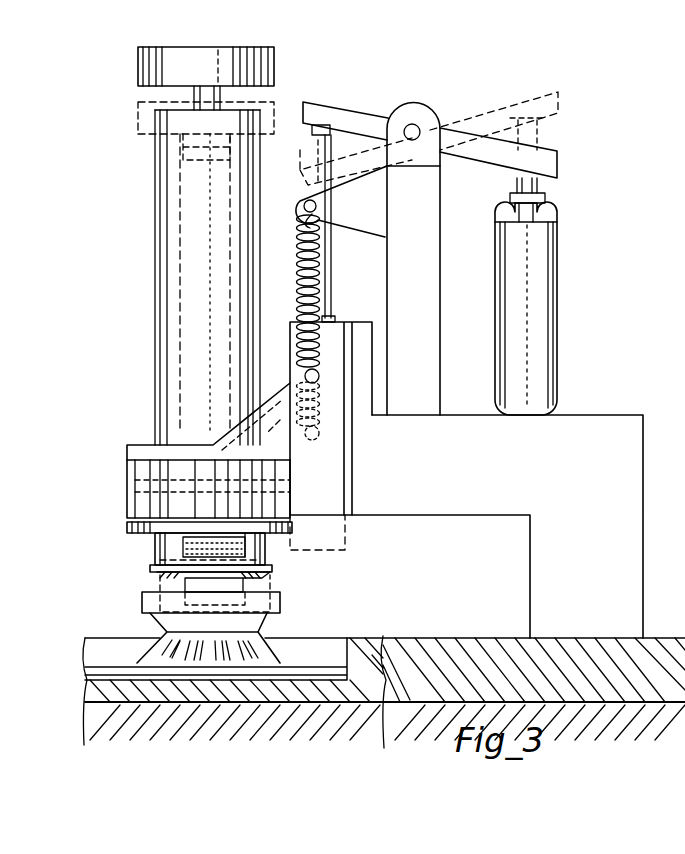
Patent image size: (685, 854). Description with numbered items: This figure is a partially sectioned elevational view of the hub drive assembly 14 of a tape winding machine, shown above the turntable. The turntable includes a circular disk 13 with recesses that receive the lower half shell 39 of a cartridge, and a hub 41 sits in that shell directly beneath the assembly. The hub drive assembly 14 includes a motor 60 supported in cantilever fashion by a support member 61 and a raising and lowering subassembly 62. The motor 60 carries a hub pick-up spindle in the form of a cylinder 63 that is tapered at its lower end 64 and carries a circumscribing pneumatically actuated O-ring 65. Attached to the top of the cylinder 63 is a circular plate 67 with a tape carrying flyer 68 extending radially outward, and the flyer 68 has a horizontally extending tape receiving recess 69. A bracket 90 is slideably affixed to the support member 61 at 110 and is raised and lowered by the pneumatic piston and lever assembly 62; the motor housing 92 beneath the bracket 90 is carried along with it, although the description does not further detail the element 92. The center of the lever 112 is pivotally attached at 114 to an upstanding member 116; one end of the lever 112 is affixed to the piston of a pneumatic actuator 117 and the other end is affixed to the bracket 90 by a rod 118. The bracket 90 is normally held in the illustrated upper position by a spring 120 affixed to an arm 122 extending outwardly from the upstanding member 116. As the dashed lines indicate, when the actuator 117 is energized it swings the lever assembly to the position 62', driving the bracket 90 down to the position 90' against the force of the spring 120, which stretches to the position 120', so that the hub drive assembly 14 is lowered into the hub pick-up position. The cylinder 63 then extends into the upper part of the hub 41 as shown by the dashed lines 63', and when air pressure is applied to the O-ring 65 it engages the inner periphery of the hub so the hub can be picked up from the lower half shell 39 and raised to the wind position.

The circular disk 13 is at (383, 640).
The hub drive assembly 14 is at (150, 291).
The lower half shell 39 is at (347, 640).
The hub 41 is at (152, 616).
The motor 60 is at (216, 252).
The support member 61 is at (492, 475).
The raising and lowering subassembly 62 is at (430, 120).
The raising and lowering subassembly lowered position 62' is at (429, 124).
The cylinder 63 is at (182, 549).
The cylinder inserted position 63' is at (245, 593).
The tapered lower end 64 is at (160, 578).
The O-ring 65 is at (150, 569).
The circular plate 67 is at (128, 527).
The flyer 68 is at (250, 533).
The recess 69 is at (202, 545).
The bracket 90 is at (208, 421).
The bracket lowered position 90' is at (345, 535).
The housing 92 is at (138, 470).
The slide attachment 110 is at (344, 478).
The lever 112 is at (552, 170).
The pivot 114 is at (418, 128).
The upstanding member 116 is at (424, 302).
The pneumatic actuator 117 is at (556, 306).
The rod 118 is at (333, 272).
The spring 120 is at (292, 298).
The spring extended position 120' is at (357, 415).
The arm 122 is at (344, 201).